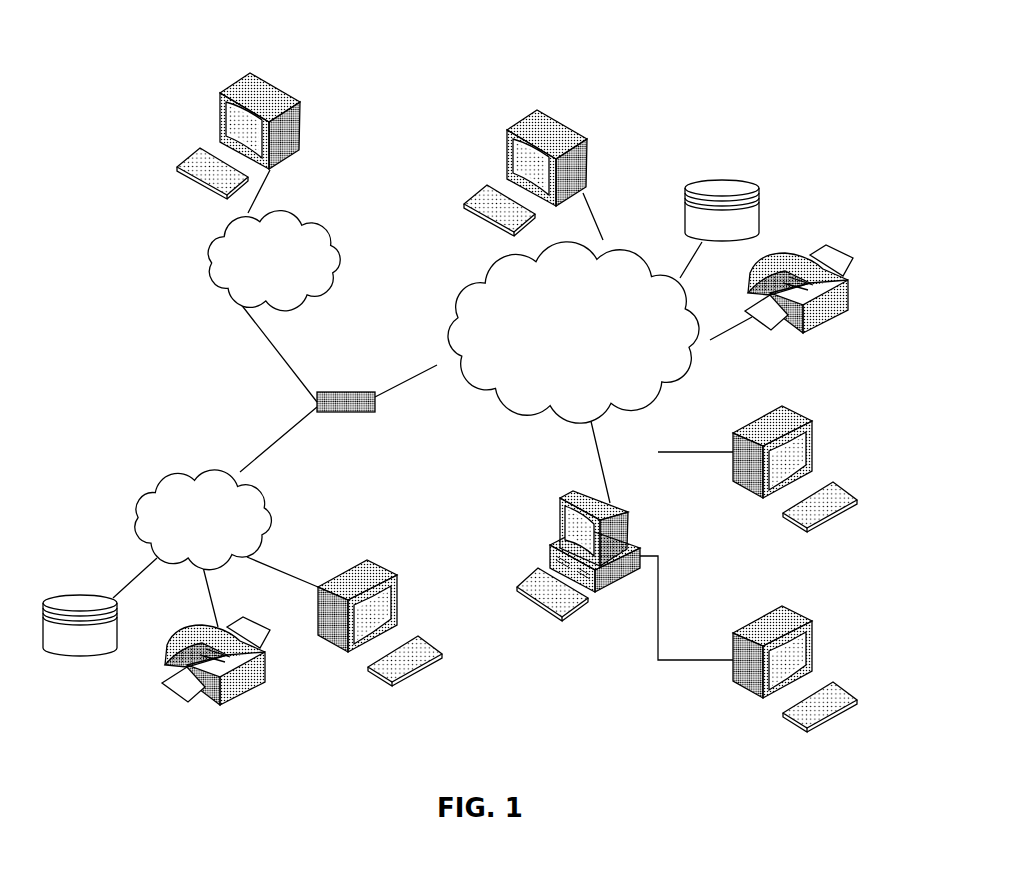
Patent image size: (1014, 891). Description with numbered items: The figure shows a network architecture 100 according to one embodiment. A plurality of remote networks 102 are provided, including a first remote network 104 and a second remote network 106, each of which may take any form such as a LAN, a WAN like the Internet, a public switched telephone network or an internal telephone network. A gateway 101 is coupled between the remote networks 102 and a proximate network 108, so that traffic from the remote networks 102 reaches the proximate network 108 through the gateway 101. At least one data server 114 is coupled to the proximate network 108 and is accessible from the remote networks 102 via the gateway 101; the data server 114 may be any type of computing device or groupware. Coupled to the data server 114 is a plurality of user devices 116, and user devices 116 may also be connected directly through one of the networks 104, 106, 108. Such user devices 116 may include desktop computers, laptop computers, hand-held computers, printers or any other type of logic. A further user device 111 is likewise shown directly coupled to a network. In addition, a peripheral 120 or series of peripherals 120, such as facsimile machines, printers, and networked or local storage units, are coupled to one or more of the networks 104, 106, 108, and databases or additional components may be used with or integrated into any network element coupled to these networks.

The architecture 100 is at (165, 60).
The gateway 101 is at (340, 390).
The remote networks 102 is at (190, 313).
The first remote network 104 is at (133, 490).
The second remote network 106 is at (337, 232).
The proximate network 108 is at (672, 393).
The user device 111 is at (587, 140).
The data server 114 is at (560, 513).
The user devices 116 is at (300, 102).
The peripheral 120 is at (760, 188).